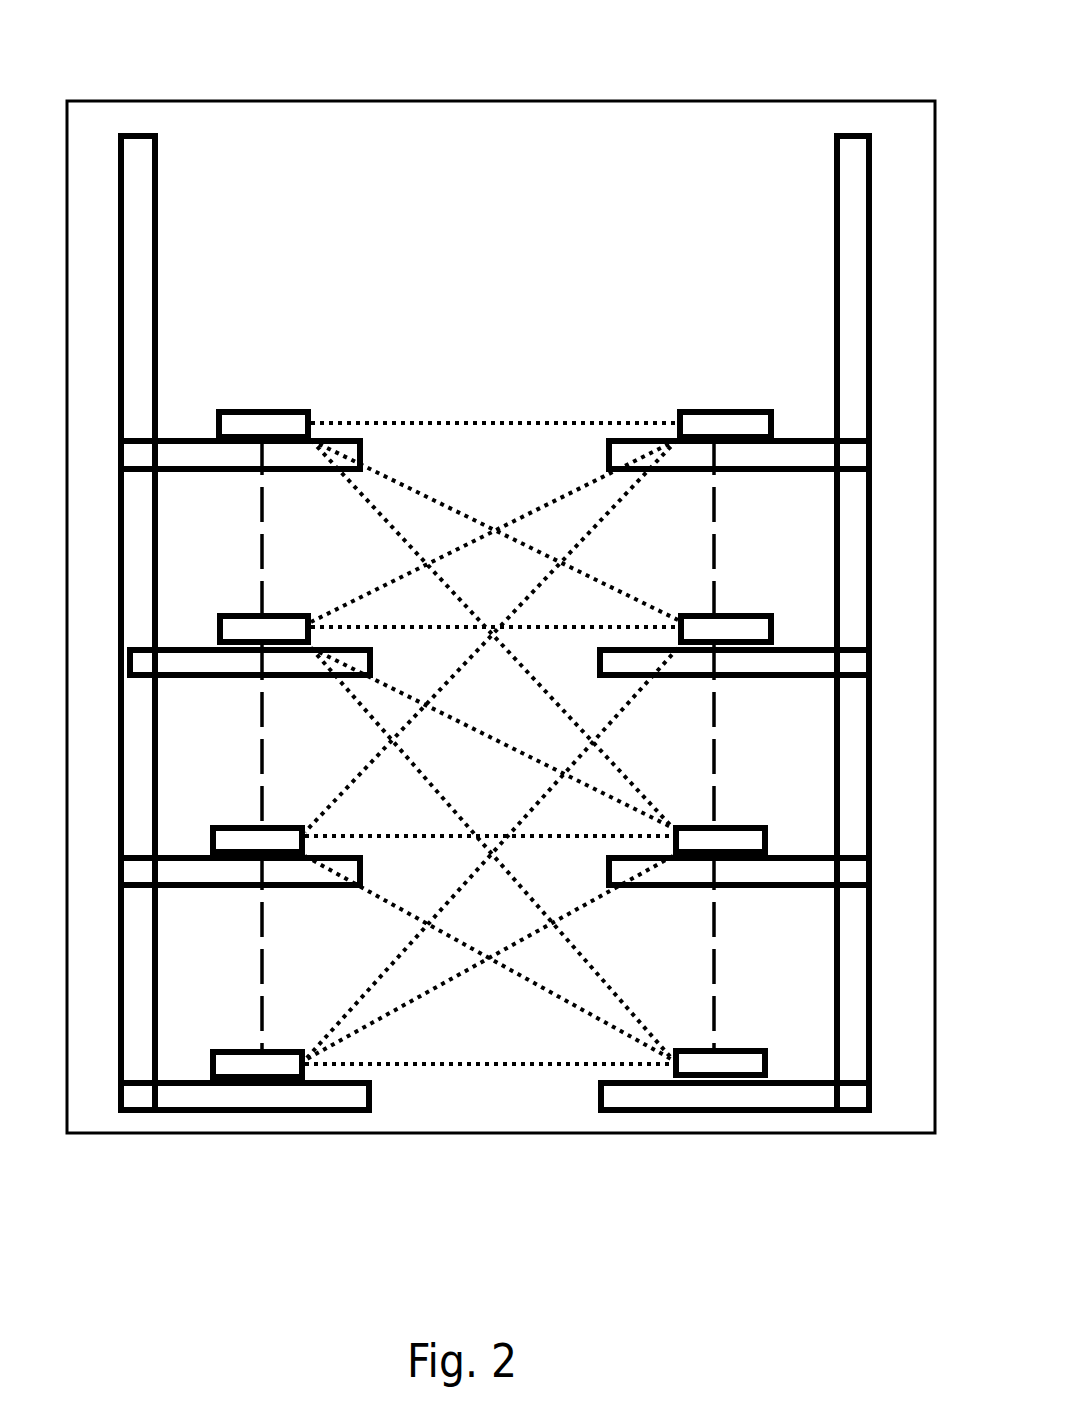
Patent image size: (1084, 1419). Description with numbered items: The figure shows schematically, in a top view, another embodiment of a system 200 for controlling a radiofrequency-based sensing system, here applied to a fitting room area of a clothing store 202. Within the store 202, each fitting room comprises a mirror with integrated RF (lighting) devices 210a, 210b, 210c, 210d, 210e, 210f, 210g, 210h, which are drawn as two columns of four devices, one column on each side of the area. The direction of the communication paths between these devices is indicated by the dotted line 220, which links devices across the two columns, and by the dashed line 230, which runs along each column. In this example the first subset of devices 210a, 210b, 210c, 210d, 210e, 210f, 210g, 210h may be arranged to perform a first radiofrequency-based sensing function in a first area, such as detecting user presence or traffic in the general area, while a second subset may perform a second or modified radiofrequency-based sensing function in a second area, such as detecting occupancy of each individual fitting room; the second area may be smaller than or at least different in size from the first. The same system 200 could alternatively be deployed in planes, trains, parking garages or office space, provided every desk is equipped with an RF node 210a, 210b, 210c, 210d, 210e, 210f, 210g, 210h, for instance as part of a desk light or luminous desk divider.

The system 200 is at (545, 1287).
The clothing store 202 is at (537, 102).
The RF (lighting) device 210a is at (248, 410).
The RF (lighting) device 210b is at (248, 612).
The RF (lighting) device 210c is at (242, 825).
The RF (lighting) device 210d is at (243, 1048).
The RF (lighting) device 210e is at (735, 408).
The RF (lighting) device 210f is at (735, 612).
The RF (lighting) device 210g is at (728, 822).
The RF (lighting) device 210h is at (737, 1041).
The dotted line 220 is at (480, 421).
The dashed line 230 is at (263, 512).